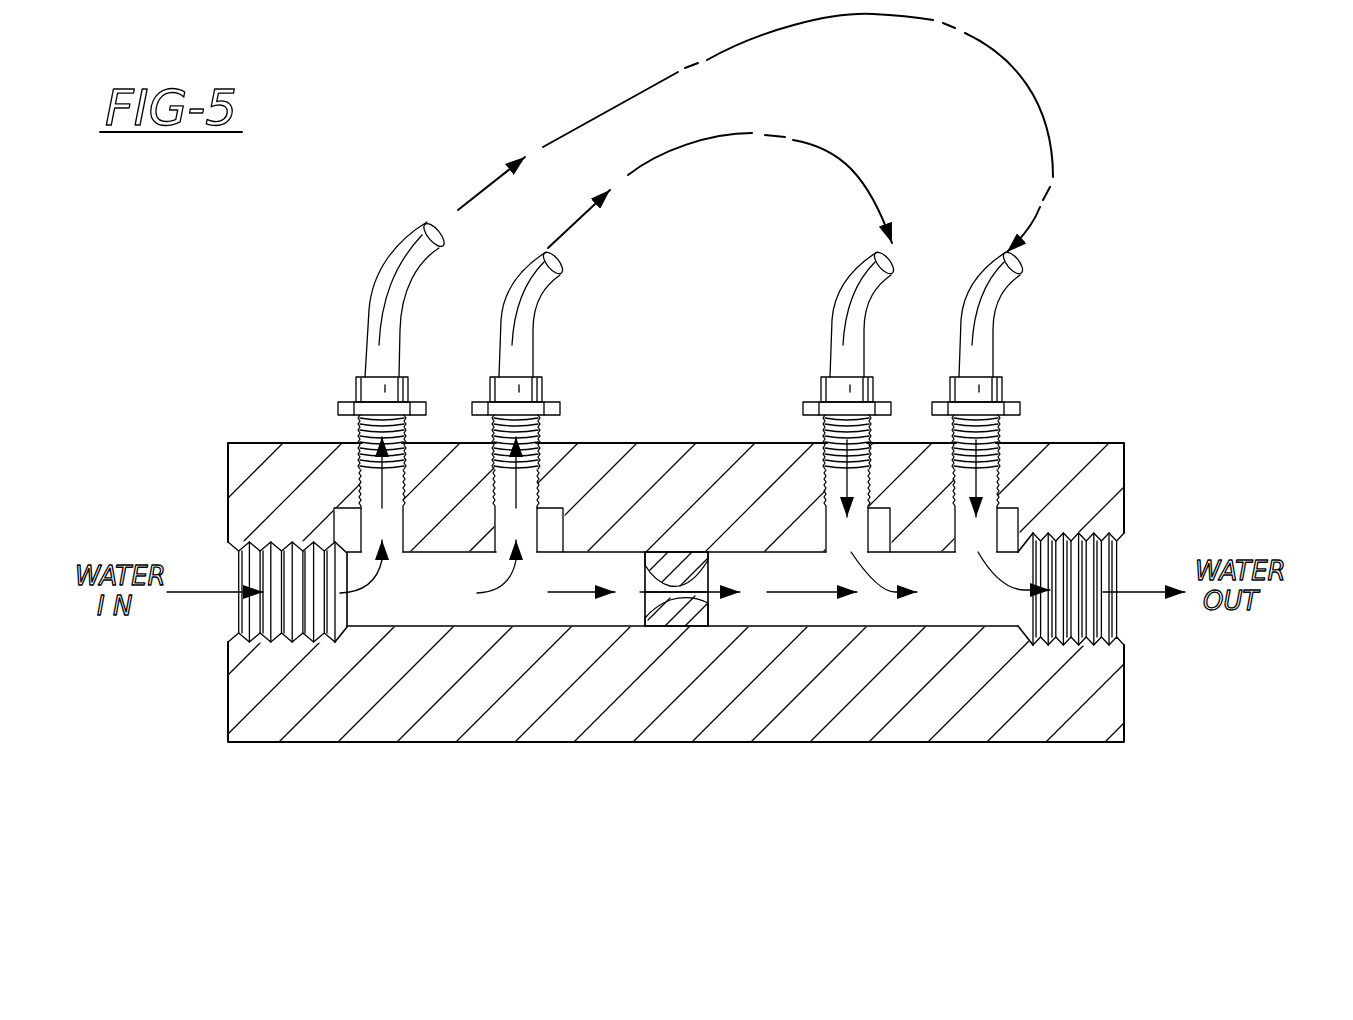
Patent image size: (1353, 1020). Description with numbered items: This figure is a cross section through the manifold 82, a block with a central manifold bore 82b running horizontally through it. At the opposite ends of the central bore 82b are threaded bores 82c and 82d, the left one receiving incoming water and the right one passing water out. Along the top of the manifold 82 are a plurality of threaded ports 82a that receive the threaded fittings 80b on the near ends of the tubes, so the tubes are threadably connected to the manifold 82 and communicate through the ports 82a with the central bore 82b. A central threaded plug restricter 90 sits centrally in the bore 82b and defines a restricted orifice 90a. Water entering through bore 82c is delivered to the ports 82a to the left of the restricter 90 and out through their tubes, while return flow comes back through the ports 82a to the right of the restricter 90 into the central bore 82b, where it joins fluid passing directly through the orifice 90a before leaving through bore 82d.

The manifold 82 is at (340, 712).
The threaded ports 82a is at (530, 515).
The central manifold bore 82b is at (427, 626).
The threaded bore 82c is at (263, 632).
The threaded bore 82d is at (1108, 623).
The threaded fittings 80b is at (358, 388).
The threaded plug restricter 90 is at (678, 552).
The restricted orifice 90a is at (712, 606).